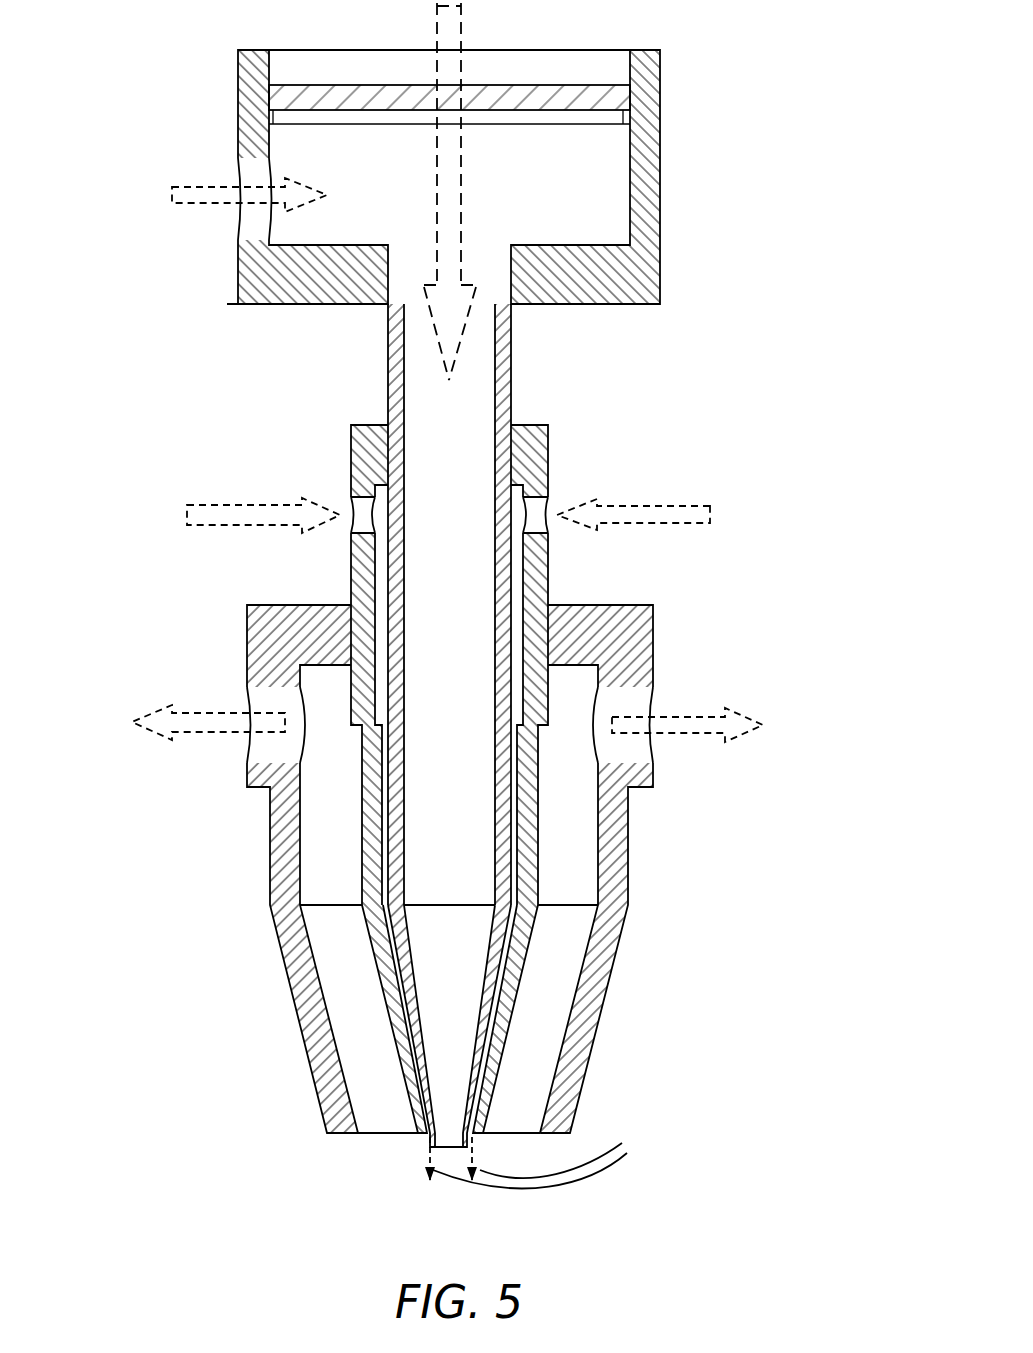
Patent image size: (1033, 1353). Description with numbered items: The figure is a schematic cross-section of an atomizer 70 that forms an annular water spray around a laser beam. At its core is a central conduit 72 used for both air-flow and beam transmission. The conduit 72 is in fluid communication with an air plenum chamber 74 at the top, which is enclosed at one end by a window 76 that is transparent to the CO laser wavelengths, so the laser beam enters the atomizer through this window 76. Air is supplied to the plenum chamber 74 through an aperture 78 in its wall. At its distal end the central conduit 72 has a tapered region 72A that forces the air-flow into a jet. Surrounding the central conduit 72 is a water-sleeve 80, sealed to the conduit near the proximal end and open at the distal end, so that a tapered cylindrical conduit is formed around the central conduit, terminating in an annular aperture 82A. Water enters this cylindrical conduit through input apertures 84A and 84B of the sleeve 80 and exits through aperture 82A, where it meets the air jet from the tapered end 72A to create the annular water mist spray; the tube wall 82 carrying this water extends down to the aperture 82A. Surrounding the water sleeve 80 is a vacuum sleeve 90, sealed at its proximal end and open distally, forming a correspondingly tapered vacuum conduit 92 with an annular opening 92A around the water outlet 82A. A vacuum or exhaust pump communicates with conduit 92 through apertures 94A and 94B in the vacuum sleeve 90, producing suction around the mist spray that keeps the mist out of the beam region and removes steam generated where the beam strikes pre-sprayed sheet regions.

The atomizer 70 is at (132, 1022).
The central conduit 72 is at (387, 372).
The tapered region 72A is at (472, 976).
The air plenum chamber 74 is at (662, 242).
The window 76 is at (567, 108).
The aperture 78 is at (248, 217).
The water-sleeve 80 is at (557, 450).
The outer water tube 82 is at (517, 566).
The annular aperture 82A is at (423, 1133).
The input aperture 84A is at (353, 508).
The input aperture 84B is at (547, 500).
The vacuum sleeve 90 is at (243, 645).
The vacuum conduit 92 is at (345, 831).
The annular opening 92A is at (380, 1123).
The aperture 94A is at (257, 748).
The aperture 94B is at (643, 697).